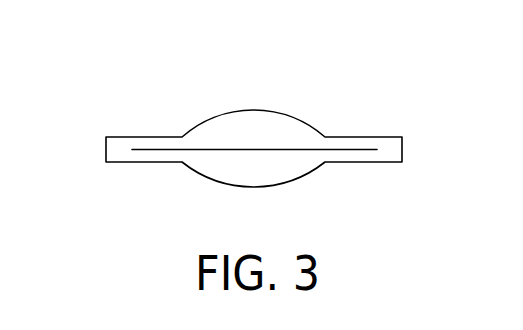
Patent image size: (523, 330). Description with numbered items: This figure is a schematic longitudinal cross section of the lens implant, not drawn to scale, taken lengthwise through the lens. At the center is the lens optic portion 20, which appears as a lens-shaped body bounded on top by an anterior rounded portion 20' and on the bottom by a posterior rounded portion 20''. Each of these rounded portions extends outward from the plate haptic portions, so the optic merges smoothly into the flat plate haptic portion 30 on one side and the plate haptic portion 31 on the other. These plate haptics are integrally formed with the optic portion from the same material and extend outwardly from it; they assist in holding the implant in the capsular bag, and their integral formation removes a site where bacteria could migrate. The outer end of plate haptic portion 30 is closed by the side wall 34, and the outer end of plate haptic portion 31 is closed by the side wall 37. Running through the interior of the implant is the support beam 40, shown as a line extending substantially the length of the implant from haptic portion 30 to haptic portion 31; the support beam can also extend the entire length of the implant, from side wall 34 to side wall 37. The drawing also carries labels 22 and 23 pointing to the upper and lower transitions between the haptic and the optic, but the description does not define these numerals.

The lens optic portion 20 is at (254, 129).
The anterior rounded portion 20' is at (261, 76).
The posterior rounded portion 20'' is at (336, 205).
The first optical fiber end 22 is at (160, 137).
The lens body region 23 is at (213, 182).
The plate haptic portion 30 is at (372, 136).
The plate haptic portion 31 is at (120, 147).
The side wall 34 is at (403, 150).
The side wall 37 is at (105, 160).
The support beam 40 is at (302, 140).